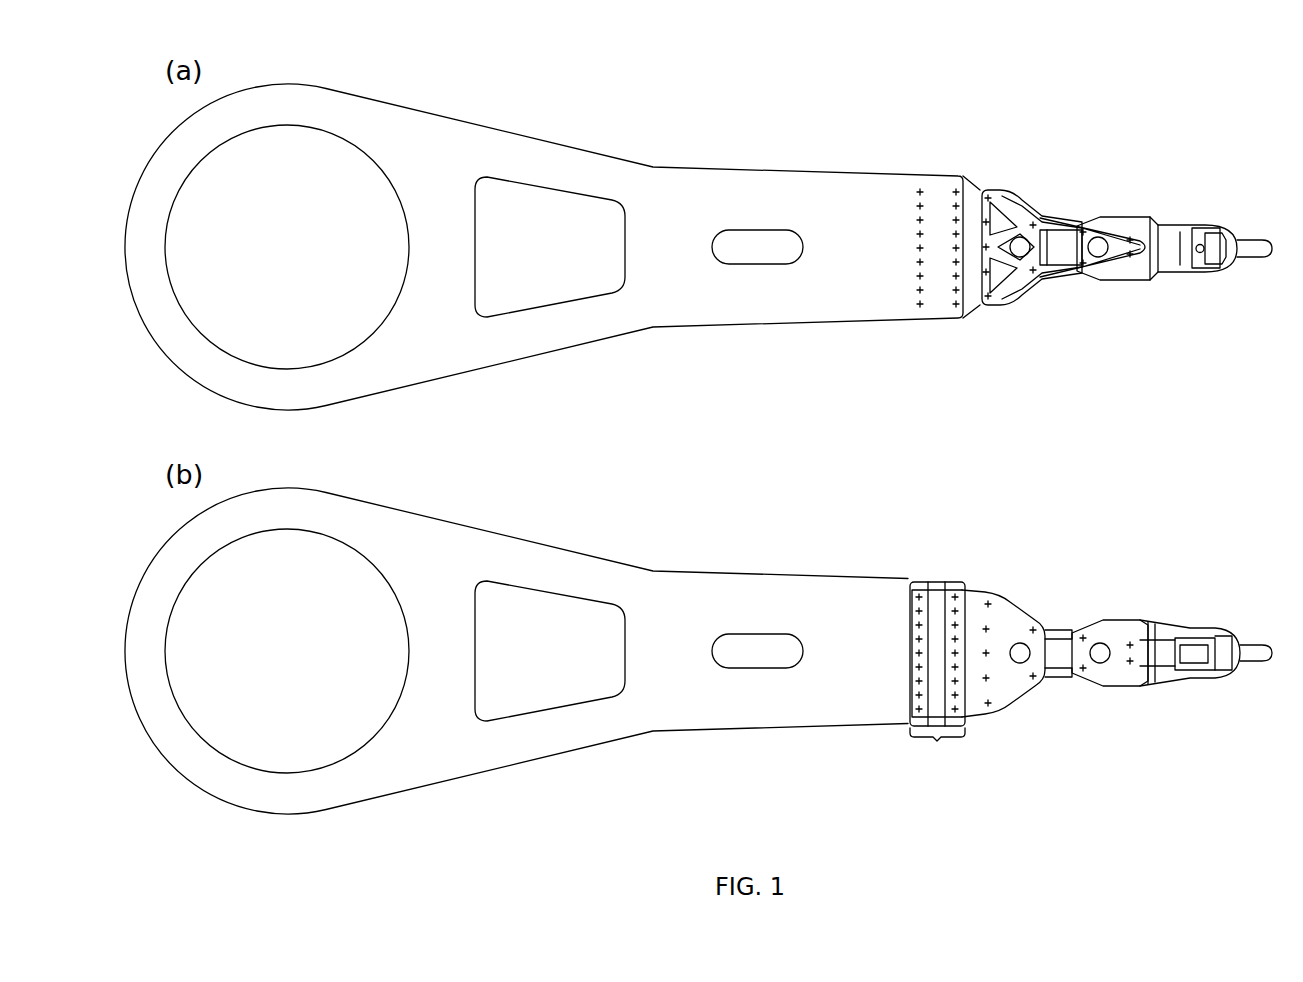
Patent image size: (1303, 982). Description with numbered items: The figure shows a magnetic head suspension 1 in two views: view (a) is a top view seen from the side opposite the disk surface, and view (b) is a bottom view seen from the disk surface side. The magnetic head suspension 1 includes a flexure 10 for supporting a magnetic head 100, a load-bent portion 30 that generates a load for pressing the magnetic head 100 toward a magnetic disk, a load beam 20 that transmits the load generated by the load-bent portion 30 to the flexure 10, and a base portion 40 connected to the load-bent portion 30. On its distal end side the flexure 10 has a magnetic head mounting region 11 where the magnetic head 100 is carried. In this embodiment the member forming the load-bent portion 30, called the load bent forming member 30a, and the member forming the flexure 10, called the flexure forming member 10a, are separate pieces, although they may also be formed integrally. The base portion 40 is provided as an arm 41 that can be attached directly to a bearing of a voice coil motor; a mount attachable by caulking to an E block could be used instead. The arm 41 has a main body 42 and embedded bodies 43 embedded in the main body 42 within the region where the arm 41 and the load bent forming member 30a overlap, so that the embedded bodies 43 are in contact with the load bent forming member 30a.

The magnetic head suspension 1 is at (1134, 157).
The flexure 10 is at (1166, 296).
The flexure forming member 10a is at (1140, 216).
The magnetic head mounting region 11 is at (1238, 625).
The load beam 20 is at (1068, 207).
The load-bent portion 30 is at (971, 324).
The load bent forming member 30a is at (981, 196).
The base portion 40 is at (544, 437).
The arm 41 is at (668, 139).
The main body 42 is at (698, 703).
The embedded bodies 43 is at (952, 582).
The magnetic head 100 is at (1225, 673).